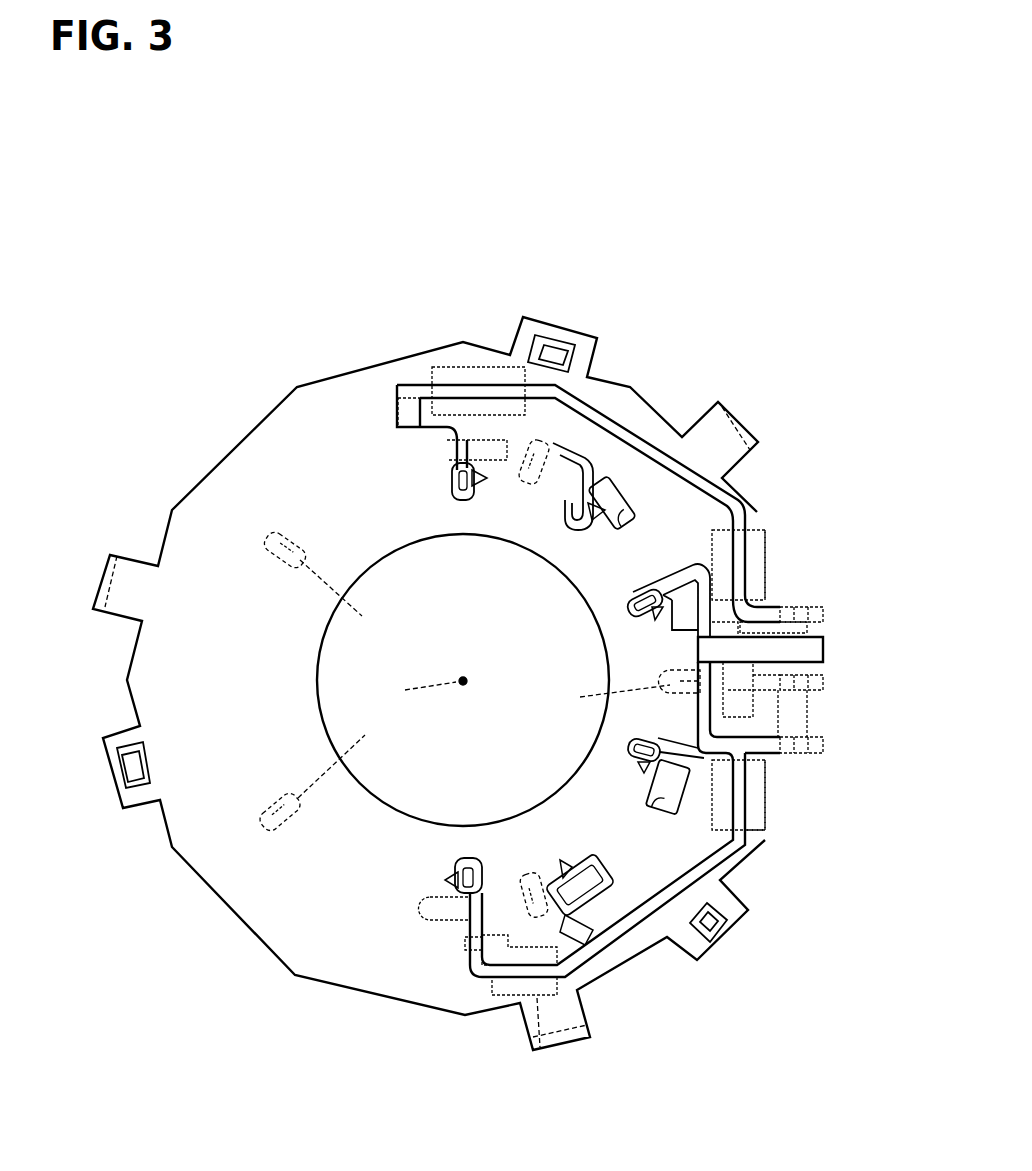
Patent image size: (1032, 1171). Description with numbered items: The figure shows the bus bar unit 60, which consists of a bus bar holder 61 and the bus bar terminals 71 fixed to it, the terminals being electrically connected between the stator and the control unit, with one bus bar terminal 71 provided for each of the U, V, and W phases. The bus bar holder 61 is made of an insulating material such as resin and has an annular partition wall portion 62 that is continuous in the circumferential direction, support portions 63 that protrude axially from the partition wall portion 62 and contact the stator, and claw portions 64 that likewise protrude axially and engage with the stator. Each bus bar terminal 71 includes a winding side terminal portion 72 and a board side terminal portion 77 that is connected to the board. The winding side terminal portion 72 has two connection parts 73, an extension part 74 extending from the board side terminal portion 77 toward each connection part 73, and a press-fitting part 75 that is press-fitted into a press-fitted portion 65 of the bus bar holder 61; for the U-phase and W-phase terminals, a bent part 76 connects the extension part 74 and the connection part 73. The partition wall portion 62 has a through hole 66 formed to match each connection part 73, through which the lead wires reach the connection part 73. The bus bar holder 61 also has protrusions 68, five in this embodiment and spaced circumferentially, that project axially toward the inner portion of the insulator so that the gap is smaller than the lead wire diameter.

The bus bar unit 60 is at (345, 985).
The bus bar holder 61 is at (397, 968).
The partition wall portion 62 is at (210, 697).
The support portion 63 is at (108, 580).
The claw portion 64 is at (130, 762).
The press-fitted portion 65 is at (438, 374).
The through hole 66 is at (470, 502).
The protrusion 68 is at (525, 872).
The bus bar terminal 71 is at (822, 657).
The winding side terminal portion 72 is at (690, 450).
The connection part 73 is at (463, 497).
The extension part 74 is at (630, 450).
The press-fitting part 75 is at (478, 400).
The bent part 76 is at (408, 410).
The board side terminal portion 77 is at (823, 612).